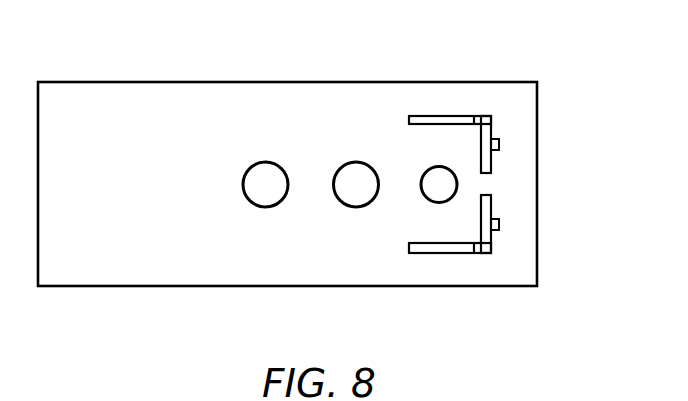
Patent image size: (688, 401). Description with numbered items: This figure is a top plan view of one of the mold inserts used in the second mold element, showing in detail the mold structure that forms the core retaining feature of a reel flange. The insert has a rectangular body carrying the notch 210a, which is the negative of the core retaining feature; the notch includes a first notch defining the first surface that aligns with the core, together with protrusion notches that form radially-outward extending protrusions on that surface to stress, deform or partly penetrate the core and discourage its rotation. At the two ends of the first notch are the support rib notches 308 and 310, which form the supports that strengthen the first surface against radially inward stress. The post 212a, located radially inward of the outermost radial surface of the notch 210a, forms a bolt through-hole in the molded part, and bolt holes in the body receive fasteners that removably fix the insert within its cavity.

The support rib notch 308 is at (438, 116).
The support rib notch 310 is at (450, 253).
The post 212a is at (458, 183).
The notch 210a is at (474, 91).